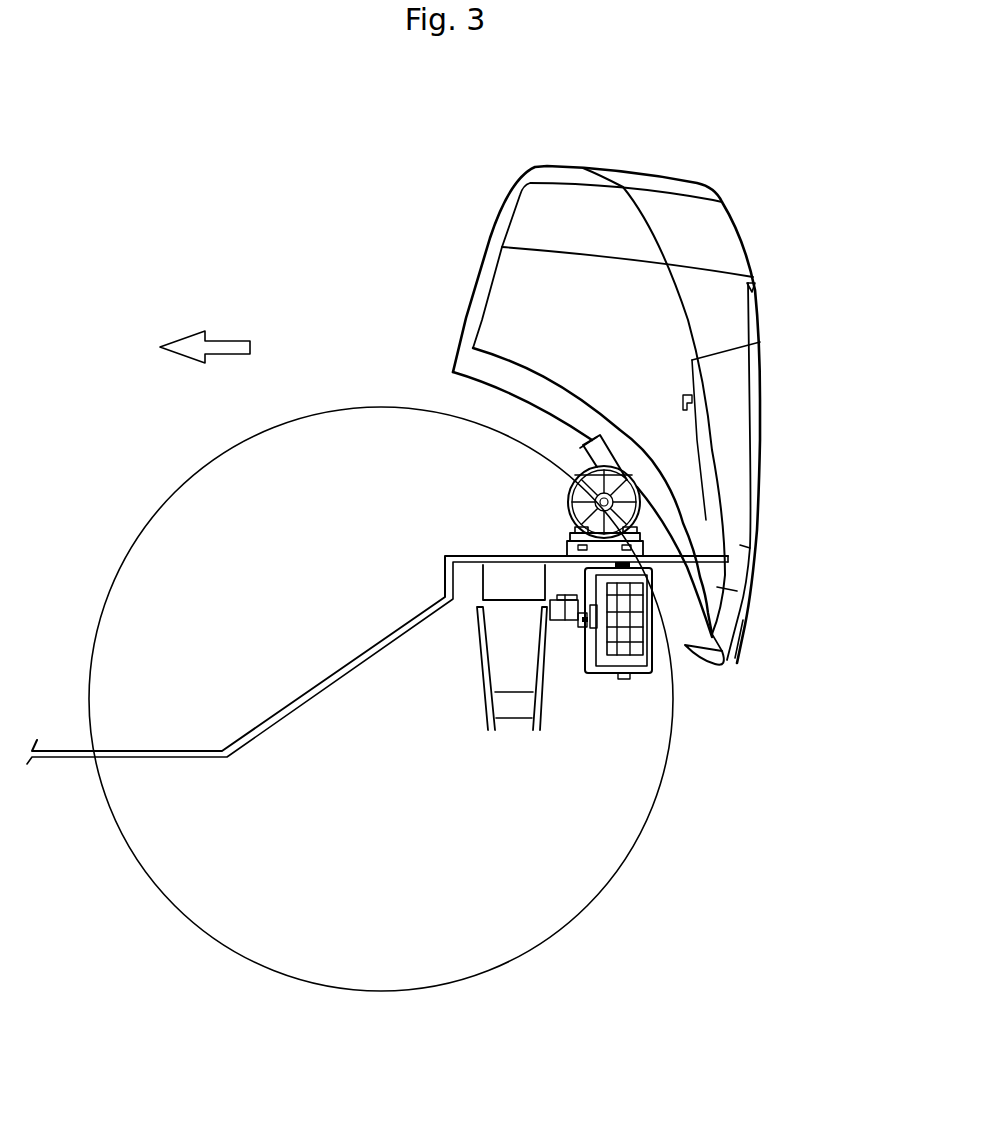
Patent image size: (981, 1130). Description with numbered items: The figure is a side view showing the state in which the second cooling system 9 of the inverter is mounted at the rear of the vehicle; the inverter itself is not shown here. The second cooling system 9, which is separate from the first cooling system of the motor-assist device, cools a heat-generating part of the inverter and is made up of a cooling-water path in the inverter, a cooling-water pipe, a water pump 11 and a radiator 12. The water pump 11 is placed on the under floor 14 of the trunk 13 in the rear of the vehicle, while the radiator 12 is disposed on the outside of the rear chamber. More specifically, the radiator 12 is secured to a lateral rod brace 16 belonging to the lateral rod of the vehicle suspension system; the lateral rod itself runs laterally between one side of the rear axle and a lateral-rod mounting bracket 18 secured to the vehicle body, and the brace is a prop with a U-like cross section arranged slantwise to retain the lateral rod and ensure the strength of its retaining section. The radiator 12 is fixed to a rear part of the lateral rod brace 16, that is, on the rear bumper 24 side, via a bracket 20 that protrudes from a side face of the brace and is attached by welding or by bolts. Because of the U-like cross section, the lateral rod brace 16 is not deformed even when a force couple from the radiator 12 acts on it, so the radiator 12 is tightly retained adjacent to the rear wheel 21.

The rear bumper 24 is at (761, 269).
The water pump 11 is at (583, 460).
The trunk 13 is at (523, 511).
The under floor 14 is at (470, 556).
The lateral rod brace 16 is at (483, 583).
The lateral-rod mounting bracket 18 is at (477, 648).
The bracket 20 is at (563, 625).
The radiator 12 is at (655, 638).
The second cooling system 9 is at (685, 677).
The rear wheel 21 is at (637, 840).